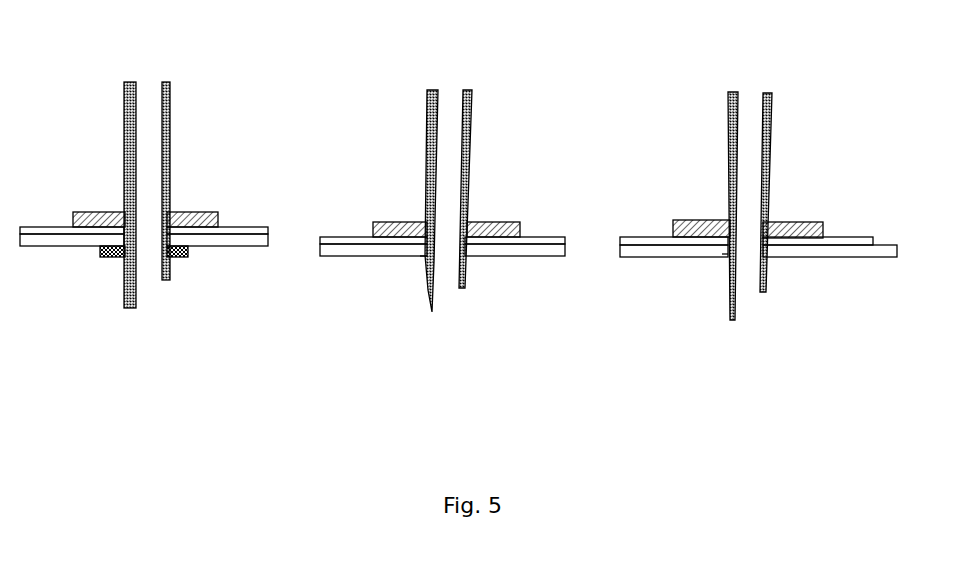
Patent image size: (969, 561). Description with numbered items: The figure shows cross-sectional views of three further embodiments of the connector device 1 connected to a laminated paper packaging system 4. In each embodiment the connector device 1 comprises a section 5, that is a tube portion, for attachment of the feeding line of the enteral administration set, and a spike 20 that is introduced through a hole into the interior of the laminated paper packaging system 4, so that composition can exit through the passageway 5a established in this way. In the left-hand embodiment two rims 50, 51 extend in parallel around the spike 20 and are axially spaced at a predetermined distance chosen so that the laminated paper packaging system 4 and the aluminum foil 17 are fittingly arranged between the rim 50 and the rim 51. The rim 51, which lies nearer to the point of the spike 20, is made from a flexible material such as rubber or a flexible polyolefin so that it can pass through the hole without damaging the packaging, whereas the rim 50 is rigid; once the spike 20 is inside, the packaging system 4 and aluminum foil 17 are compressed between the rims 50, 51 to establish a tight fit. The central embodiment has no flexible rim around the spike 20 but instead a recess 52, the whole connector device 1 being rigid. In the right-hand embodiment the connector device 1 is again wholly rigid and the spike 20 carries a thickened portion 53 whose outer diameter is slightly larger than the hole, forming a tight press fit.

The connector device 1 is at (182, 162).
The laminated paper packaging system 4 is at (267, 230).
The section 5 is at (168, 110).
The passageway 5a is at (148, 78).
The aluminum foil 17 is at (263, 242).
The spike 20 is at (165, 263).
The rim 50 is at (93, 212).
The rim 51 is at (107, 257).
The recess 52 is at (422, 256).
The thickened portion 53 is at (725, 254).